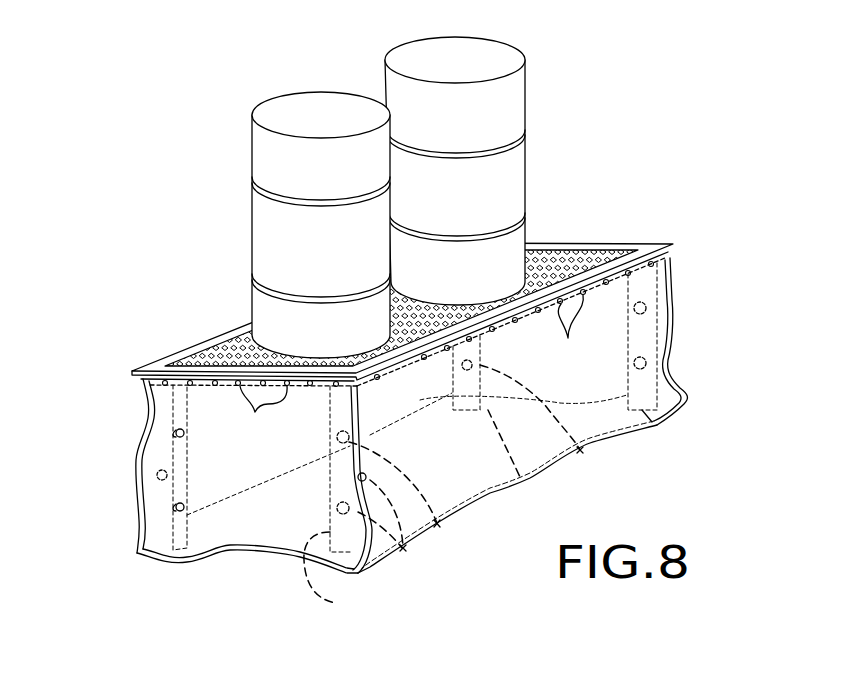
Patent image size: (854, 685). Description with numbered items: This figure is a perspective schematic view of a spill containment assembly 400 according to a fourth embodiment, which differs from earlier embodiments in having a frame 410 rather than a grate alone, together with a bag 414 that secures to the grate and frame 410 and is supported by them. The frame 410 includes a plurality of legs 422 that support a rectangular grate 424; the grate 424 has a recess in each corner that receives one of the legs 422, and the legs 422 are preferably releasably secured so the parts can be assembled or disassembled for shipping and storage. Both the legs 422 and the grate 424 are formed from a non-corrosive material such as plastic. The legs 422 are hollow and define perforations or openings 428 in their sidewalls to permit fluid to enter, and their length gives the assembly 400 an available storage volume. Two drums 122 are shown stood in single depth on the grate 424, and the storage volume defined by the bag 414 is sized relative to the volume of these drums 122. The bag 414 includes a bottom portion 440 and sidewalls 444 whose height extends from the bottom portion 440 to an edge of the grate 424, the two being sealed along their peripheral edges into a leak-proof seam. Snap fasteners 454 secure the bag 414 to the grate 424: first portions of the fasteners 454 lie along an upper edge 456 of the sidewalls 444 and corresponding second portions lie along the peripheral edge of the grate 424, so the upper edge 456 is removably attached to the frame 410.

The drum 122 is at (315, 90).
The spill containment assembly 400 is at (653, 220).
The frame 410 is at (583, 227).
The bag 414 is at (675, 323).
The legs 422 is at (147, 532).
The grate 424 is at (190, 348).
The openings 428 is at (176, 433).
The bottom portion 440 is at (266, 562).
The sidewalls 444 is at (155, 420).
The snap fasteners 454 is at (411, 367).
The upper edge 456 is at (366, 384).